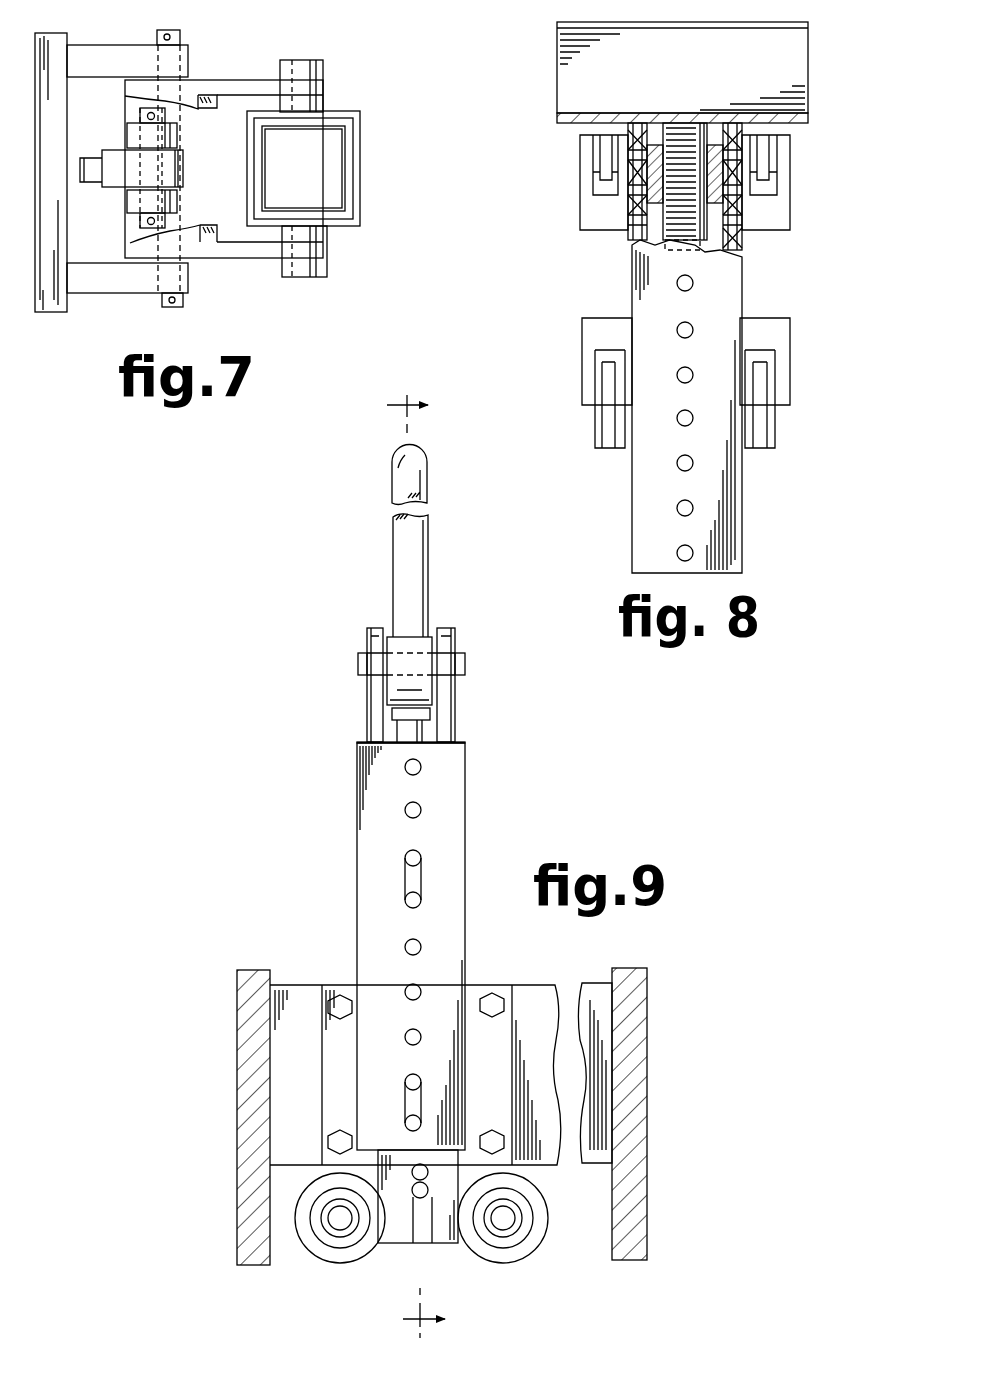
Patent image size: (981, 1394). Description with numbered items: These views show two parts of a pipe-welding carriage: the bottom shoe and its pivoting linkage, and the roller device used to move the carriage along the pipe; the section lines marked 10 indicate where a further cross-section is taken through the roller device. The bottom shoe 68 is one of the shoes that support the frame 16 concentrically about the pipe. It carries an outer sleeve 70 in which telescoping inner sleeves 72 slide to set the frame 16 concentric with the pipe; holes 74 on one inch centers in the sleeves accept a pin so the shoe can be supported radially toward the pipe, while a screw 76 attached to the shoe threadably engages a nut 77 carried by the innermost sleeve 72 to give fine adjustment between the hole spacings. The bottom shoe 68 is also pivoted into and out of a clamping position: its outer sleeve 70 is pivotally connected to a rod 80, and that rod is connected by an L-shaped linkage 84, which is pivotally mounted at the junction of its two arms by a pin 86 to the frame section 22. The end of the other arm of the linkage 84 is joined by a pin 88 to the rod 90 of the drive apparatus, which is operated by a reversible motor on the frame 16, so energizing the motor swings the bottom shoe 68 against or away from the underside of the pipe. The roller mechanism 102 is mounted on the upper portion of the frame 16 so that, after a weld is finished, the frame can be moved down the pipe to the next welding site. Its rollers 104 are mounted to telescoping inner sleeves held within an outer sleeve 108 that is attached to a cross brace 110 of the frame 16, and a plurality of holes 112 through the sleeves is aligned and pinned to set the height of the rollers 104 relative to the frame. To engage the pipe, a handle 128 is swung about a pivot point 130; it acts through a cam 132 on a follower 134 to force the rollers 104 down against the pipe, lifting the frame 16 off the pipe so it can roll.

In FIG. 9, the section line 10 is at (433, 864).
In FIG. 9, the frame 16 is at (649, 966).
In FIG. 7, the frame section 22 is at (64, 30).
In FIG. 8, the frame section 22 is at (788, 322).
In FIG. 8, the bottom shoe 68 is at (806, 58).
In FIG. 7, the outer sleeve 70 is at (359, 171).
In FIG. 8, the outer sleeve 70 is at (740, 498).
In FIG. 7, the inner sleeve 72 is at (350, 130).
In FIG. 8, the holes 74 is at (690, 322).
In FIG. 8, the screw 76 is at (630, 222).
In FIG. 8, the nut 77 is at (743, 240).
In FIG. 7, the rod 80 is at (294, 58).
In FIG. 7, the L-shaped linkage 84 is at (211, 78).
In FIG. 7, the pin 86 is at (179, 29).
In FIG. 7, the pin 88 is at (164, 116).
In FIG. 7, the rod 90 is at (181, 166).
In FIG. 9, the roller mechanism 102 is at (469, 741).
In FIG. 9, the rollers 104 is at (544, 1222).
In FIG. 9, the outer sleeve 108 is at (466, 805).
In FIG. 9, the cross brace 110 is at (541, 982).
In FIG. 9, the holes 112 is at (404, 805).
In FIG. 9, the handle 128 is at (426, 562).
In FIG. 9, the pivot point 130 is at (465, 662).
In FIG. 9, the cam 132 is at (387, 637).
In FIG. 9, the follower 134 is at (392, 713).